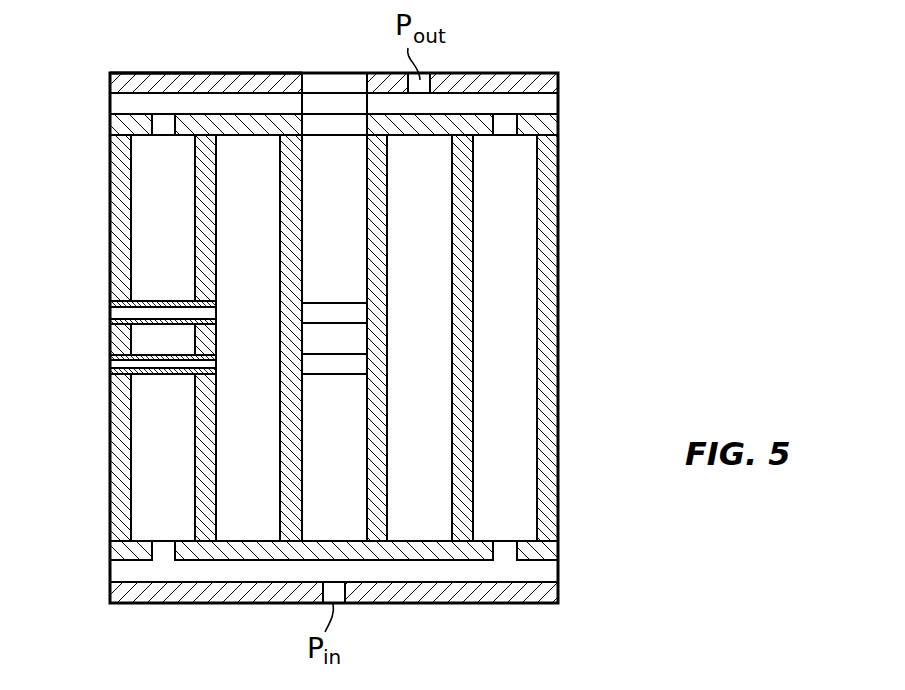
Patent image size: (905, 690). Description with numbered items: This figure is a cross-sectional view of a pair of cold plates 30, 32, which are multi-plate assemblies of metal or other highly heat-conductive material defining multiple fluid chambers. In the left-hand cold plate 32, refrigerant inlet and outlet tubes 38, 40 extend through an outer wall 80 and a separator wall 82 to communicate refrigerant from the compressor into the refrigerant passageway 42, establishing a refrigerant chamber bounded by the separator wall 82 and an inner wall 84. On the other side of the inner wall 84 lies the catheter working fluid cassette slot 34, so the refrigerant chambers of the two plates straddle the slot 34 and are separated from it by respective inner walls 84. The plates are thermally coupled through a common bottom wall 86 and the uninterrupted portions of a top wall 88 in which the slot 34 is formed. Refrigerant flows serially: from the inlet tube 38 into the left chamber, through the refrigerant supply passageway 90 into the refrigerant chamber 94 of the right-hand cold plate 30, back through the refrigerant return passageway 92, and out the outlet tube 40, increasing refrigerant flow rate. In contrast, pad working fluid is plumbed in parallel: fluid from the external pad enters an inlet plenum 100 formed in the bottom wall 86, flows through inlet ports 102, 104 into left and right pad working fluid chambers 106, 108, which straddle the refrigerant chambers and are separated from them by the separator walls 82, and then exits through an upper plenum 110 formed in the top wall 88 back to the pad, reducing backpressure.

The cold plate 30 is at (491, 50).
The cold plate 32 is at (174, 50).
The catheter working fluid cassette slot 34 is at (342, 75).
The refrigerant inlet tube 38 is at (155, 301).
The refrigerant outlet tube 40 is at (155, 375).
The refrigerant passageway 42 is at (240, 417).
The outer wall 80 is at (110, 177).
The separator wall 82 is at (195, 455).
The inner wall 84 is at (280, 258).
The bottom wall 86 is at (110, 550).
The top wall 88 is at (558, 128).
The refrigerant supply passageway 90 is at (335, 302).
The refrigerant return passageway 92 is at (333, 375).
The refrigerant chamber 94 is at (436, 234).
The inlet plenum 100 is at (558, 570).
The inlet port 102 is at (163, 549).
The inlet port 104 is at (505, 548).
The pad working fluid chamber 106 is at (155, 242).
The pad working fluid chamber 108 is at (520, 215).
The upper plenum 110 is at (110, 103).